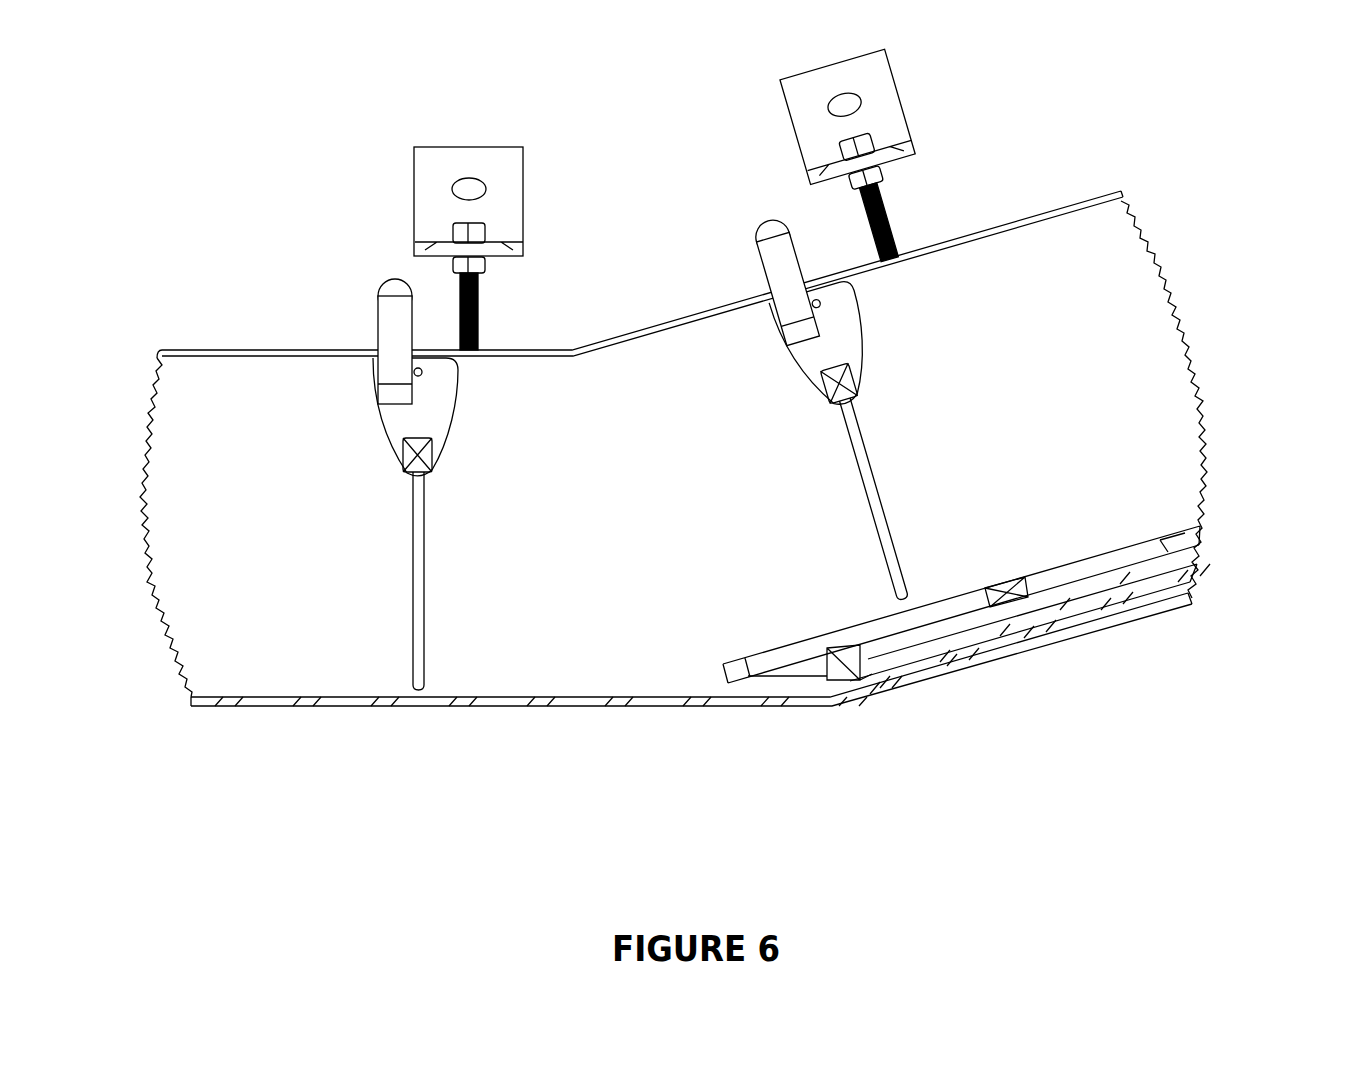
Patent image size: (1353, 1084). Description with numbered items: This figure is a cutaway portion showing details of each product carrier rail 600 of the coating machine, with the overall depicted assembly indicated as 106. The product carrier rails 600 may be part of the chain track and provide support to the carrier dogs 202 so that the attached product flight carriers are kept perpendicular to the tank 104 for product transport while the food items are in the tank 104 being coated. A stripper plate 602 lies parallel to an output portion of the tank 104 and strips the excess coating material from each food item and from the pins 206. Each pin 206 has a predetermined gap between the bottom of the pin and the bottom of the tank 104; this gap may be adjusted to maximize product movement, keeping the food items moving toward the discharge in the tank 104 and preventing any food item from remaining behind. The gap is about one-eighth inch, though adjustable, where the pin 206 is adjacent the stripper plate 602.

The support assembly 106 is at (246, 142).
The product carrier rail 600 is at (263, 349).
The tank 104 is at (351, 705).
The carrier dog 202 is at (381, 273).
The pin 206 is at (866, 510).
The stripper plate 602 is at (1123, 546).